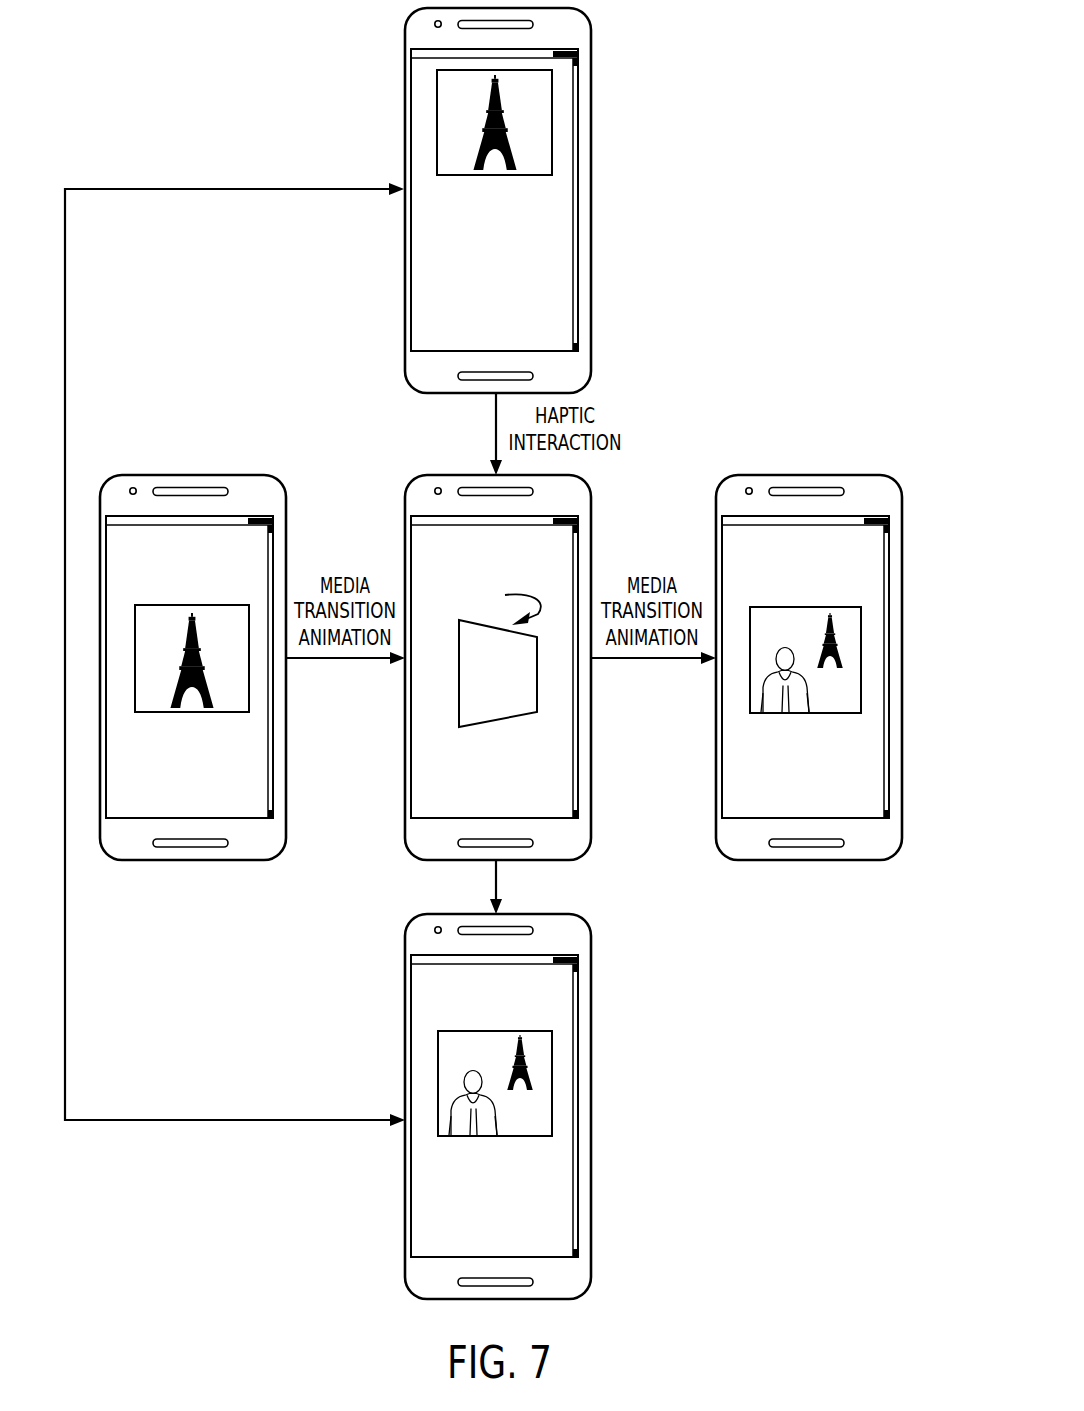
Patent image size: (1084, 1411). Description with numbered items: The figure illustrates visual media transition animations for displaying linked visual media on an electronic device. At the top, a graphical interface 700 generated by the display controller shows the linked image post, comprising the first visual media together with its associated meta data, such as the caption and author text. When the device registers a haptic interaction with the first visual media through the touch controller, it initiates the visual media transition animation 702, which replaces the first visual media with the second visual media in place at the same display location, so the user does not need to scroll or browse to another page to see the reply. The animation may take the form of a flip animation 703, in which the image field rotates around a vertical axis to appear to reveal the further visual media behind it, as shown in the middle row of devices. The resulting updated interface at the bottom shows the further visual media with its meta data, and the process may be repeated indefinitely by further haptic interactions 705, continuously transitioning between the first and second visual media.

The graphical interface 700 is at (681, 79).
The visual media transition animation 702 is at (848, 461).
The flip animation 703 is at (492, 705).
The further haptic interactions 705 is at (248, 1038).